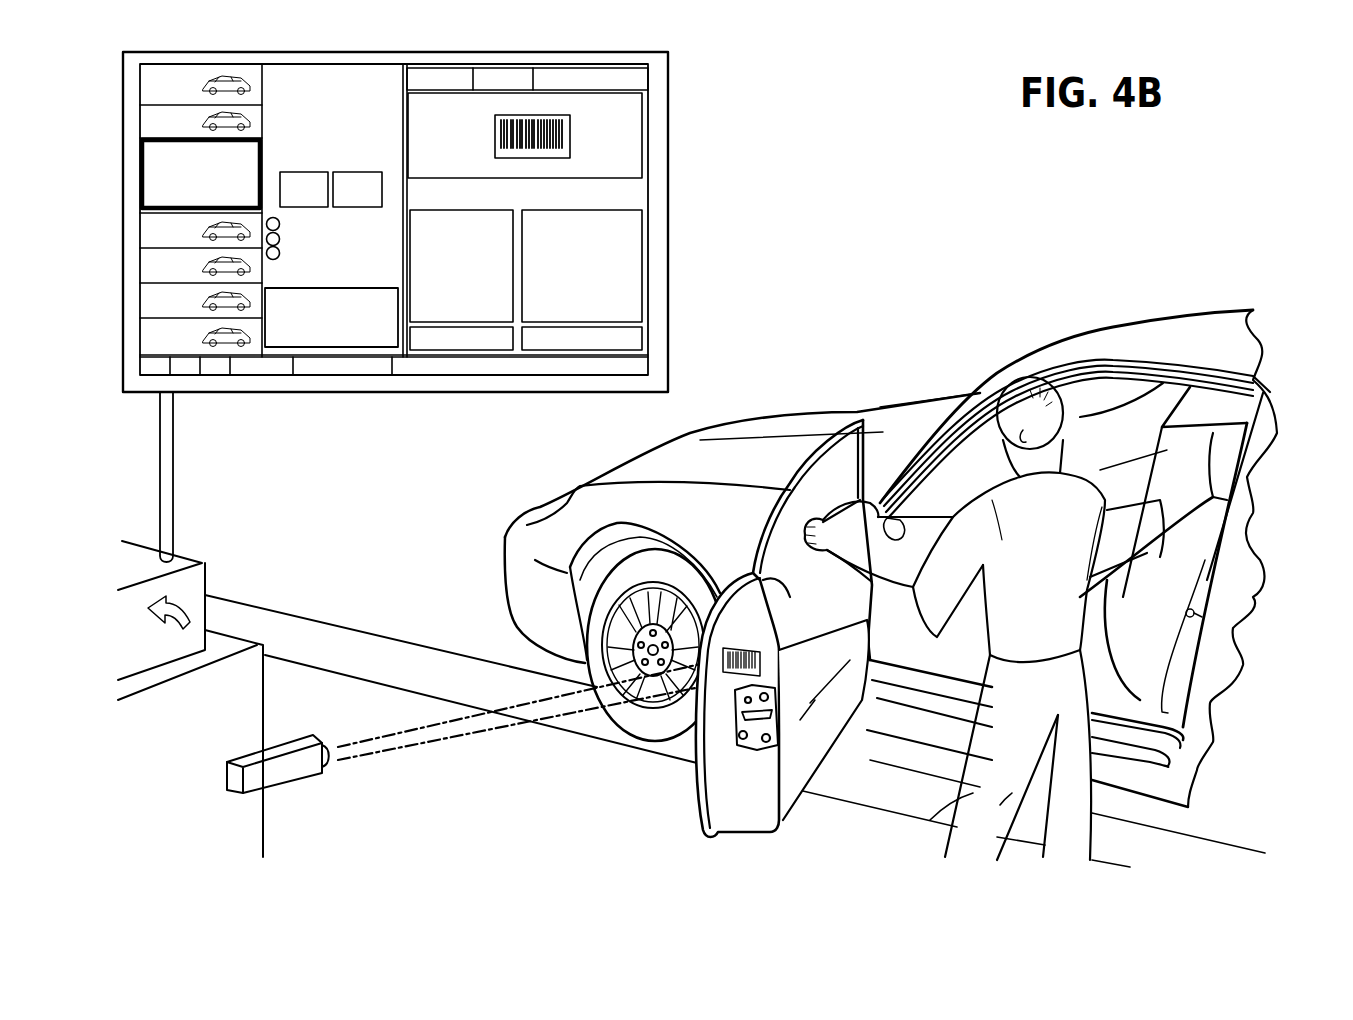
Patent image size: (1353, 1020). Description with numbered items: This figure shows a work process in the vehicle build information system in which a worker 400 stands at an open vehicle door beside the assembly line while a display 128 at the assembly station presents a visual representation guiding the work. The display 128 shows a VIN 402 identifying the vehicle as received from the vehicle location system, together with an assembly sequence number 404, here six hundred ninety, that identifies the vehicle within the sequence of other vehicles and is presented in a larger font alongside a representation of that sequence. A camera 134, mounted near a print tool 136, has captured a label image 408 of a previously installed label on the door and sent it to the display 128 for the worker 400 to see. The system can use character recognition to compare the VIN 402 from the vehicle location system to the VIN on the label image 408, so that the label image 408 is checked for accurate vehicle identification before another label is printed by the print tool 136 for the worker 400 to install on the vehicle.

The display 128 is at (668, 122).
The VIN 402 is at (376, 79).
The assembly sequence number 404 is at (333, 121).
The label image 408 is at (572, 150).
The print tool 136 is at (197, 587).
The camera 134 is at (278, 772).
The worker 400 is at (975, 793).